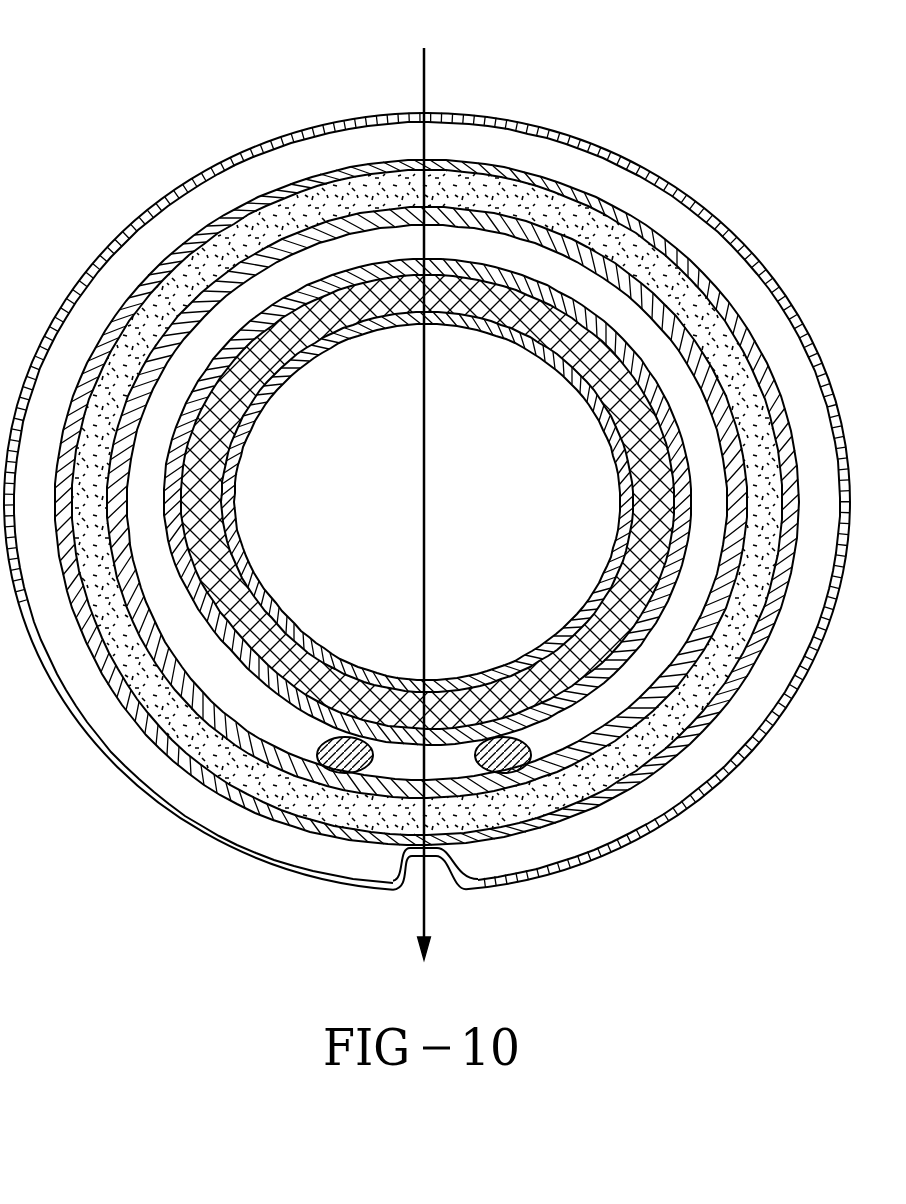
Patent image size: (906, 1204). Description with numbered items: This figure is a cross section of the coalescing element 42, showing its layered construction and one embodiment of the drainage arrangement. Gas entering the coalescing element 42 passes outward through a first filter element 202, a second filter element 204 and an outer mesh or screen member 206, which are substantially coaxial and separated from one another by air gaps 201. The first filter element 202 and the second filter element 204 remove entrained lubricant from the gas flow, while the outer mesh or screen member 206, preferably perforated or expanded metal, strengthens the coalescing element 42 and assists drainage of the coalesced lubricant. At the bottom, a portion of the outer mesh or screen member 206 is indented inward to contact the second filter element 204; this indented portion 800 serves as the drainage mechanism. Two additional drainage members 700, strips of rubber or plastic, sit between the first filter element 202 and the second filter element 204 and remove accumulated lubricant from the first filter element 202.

The coalescing element 42 is at (92, 124).
The air gaps 201 is at (150, 572).
The first filter element 202 is at (212, 421).
The second filter element 204 is at (143, 687).
The outer mesh or screen member 206 is at (728, 767).
The additional drainage member 700 is at (340, 748).
The indented portion 800 is at (408, 876).